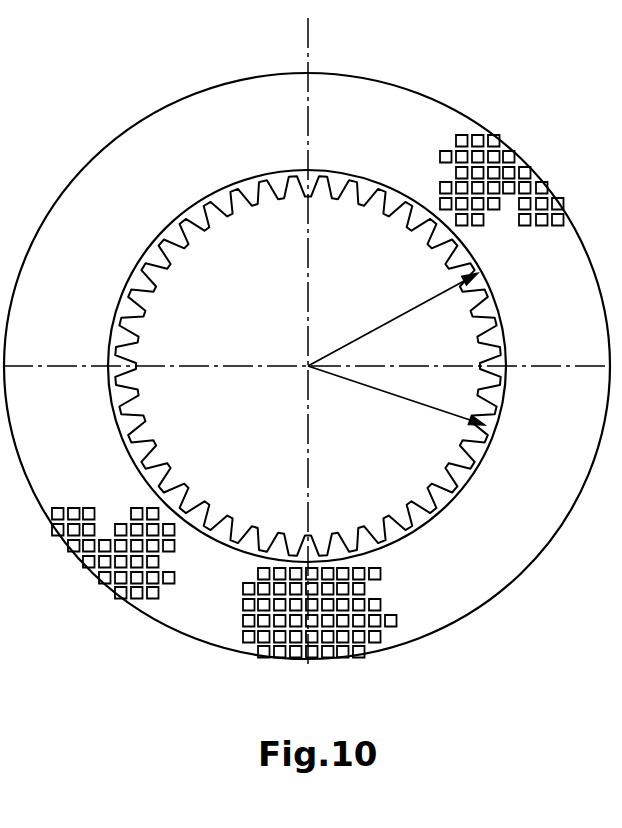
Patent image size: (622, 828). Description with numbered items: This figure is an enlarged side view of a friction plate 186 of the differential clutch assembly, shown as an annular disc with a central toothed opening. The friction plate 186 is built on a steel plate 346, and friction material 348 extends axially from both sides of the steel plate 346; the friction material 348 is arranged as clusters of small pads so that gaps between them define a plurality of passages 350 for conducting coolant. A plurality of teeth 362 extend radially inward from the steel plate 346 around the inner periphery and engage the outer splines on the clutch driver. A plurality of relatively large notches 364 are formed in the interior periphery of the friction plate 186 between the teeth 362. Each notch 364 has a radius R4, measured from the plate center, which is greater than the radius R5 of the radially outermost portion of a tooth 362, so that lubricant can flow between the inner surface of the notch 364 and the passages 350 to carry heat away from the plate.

The friction plate 186 is at (386, 52).
The teeth 362 is at (221, 194).
The notches 364 is at (142, 262).
The steel plate 346 is at (327, 662).
The friction material 348 is at (282, 656).
The passages 350 is at (318, 662).
The radius of the notches R4 is at (415, 307).
The radius of a radially outermost portion of a tooth R5 is at (414, 404).